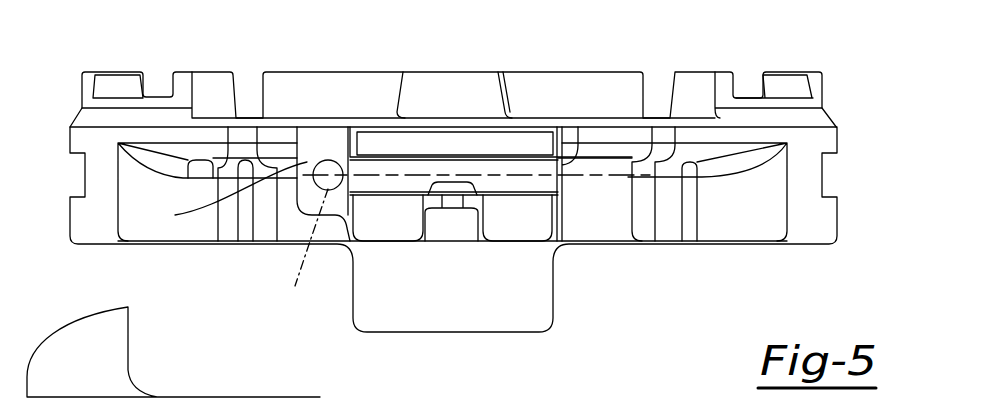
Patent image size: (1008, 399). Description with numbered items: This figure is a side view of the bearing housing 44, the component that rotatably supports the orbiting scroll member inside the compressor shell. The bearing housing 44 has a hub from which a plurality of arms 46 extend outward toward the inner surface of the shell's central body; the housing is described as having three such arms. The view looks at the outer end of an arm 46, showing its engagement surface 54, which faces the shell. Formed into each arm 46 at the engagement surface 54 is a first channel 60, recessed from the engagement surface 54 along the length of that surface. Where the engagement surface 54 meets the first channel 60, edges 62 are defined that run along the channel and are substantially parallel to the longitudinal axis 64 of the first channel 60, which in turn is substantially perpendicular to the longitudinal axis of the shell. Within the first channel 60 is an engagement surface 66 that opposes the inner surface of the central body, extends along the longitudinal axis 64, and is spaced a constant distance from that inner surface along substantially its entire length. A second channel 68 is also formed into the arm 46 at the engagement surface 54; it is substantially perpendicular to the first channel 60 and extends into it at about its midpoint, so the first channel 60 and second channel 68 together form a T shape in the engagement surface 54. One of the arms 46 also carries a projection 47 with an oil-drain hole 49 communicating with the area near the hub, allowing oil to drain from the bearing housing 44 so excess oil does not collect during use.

The bearing housing 44 is at (834, 38).
The arm 46 is at (563, 244).
The projection 47 is at (335, 114).
The oil-drain hole 49 is at (327, 161).
The engagement surface 54 is at (428, 143).
The first channel 60 is at (540, 182).
The edge 62 is at (374, 143).
The longitudinal axis 64 is at (466, 245).
The engagement surface 66 is at (651, 0).
The second channel 68 is at (452, 212).